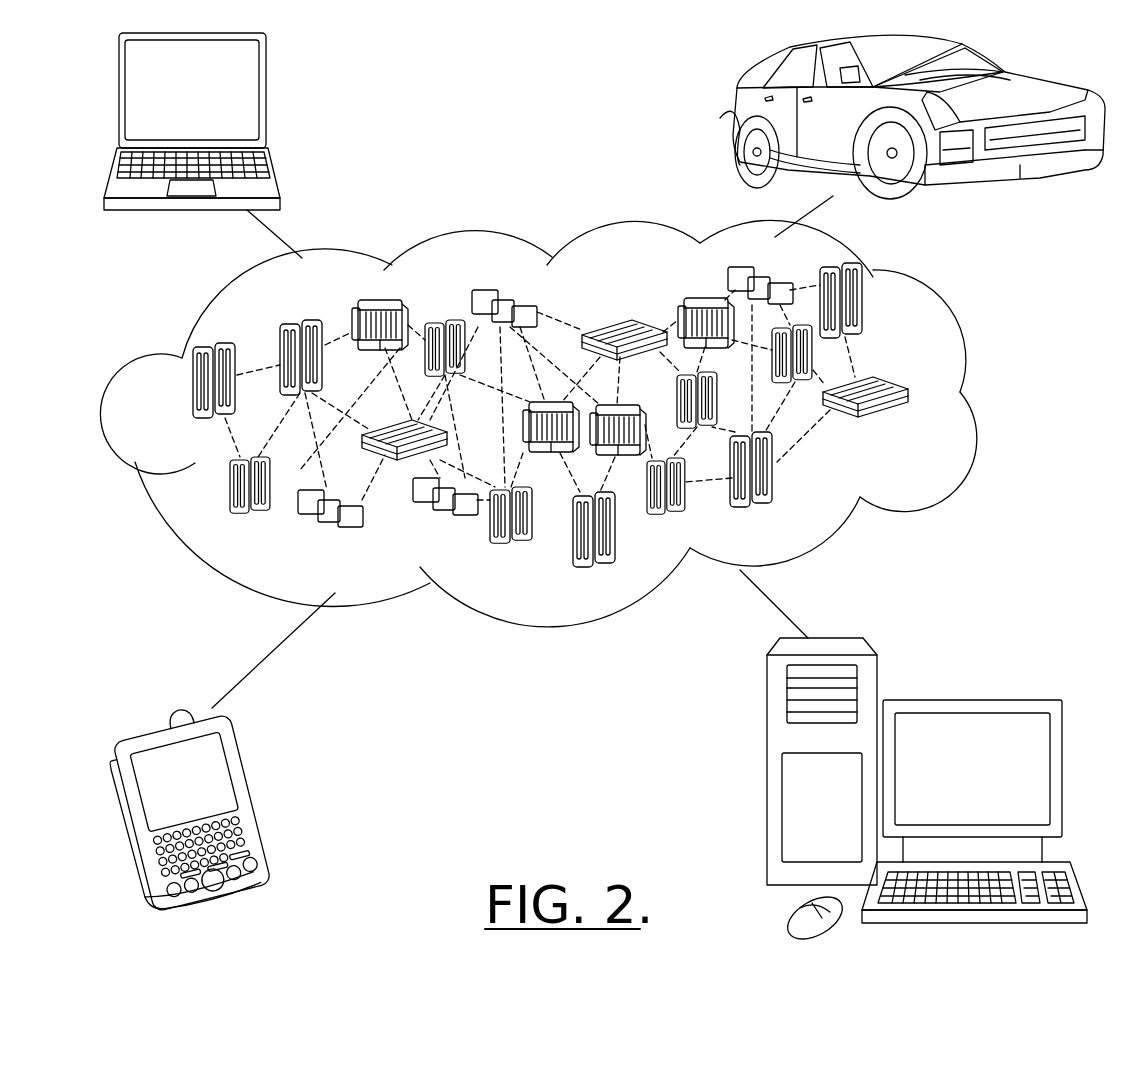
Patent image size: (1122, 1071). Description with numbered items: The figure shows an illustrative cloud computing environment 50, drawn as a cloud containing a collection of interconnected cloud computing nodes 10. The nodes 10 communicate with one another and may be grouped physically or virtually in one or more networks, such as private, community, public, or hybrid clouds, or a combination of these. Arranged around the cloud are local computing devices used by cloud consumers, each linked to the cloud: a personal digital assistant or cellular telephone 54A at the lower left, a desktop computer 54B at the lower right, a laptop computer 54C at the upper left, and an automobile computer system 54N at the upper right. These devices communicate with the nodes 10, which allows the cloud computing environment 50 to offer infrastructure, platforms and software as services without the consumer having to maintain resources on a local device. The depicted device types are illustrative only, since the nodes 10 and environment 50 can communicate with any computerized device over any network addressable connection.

The cloud computing node 10 is at (908, 423).
The cloud computing environment 50 is at (970, 392).
The personal digital assistant or cellular telephone 54A is at (258, 805).
The desktop computer 54B is at (967, 700).
The laptop computer 54C is at (274, 96).
The automobile computer system 54N is at (735, 112).